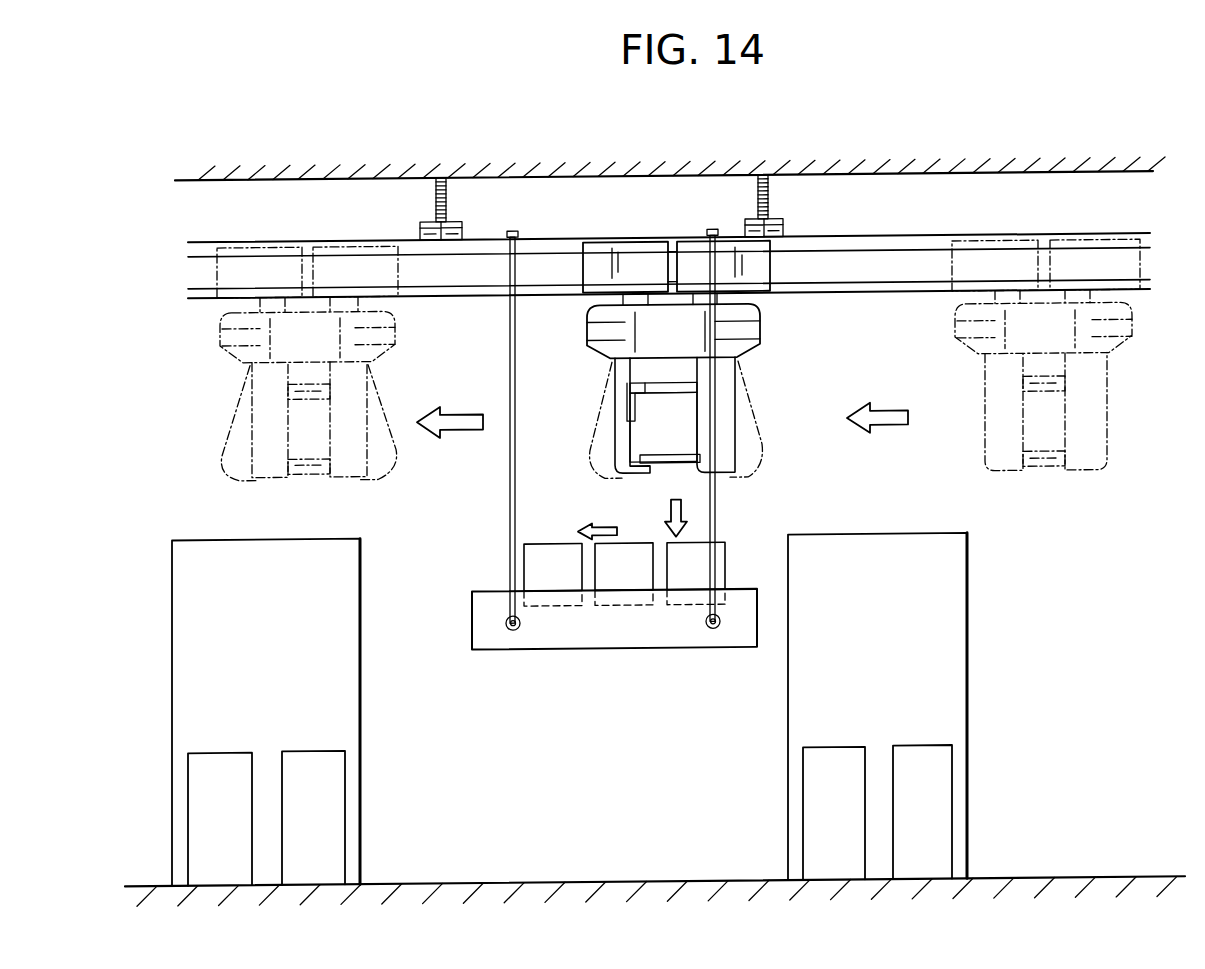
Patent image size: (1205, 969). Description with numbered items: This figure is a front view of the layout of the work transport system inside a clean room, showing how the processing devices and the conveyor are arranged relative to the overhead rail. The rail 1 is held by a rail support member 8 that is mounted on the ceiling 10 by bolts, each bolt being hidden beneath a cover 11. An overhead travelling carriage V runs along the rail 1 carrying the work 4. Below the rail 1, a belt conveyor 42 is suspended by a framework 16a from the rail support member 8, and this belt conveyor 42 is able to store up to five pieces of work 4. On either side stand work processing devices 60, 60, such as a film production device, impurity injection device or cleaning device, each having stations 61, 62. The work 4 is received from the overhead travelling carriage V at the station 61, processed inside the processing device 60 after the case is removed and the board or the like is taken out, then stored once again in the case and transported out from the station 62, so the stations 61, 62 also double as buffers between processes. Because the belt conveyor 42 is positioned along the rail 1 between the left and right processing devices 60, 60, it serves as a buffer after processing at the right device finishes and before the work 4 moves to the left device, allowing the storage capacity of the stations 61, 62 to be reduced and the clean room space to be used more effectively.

The ceiling 10 is at (1087, 177).
The rail 1 is at (929, 237).
The cover 11 is at (436, 201).
The rail support member 8 is at (463, 222).
The overhead travelling carriage V is at (762, 325).
The work 4 is at (653, 437).
The framework 16a is at (509, 501).
The belt conveyor 42 is at (622, 650).
The work processing device 60 is at (361, 615).
The station 61 is at (330, 748).
The station 62 is at (205, 748).